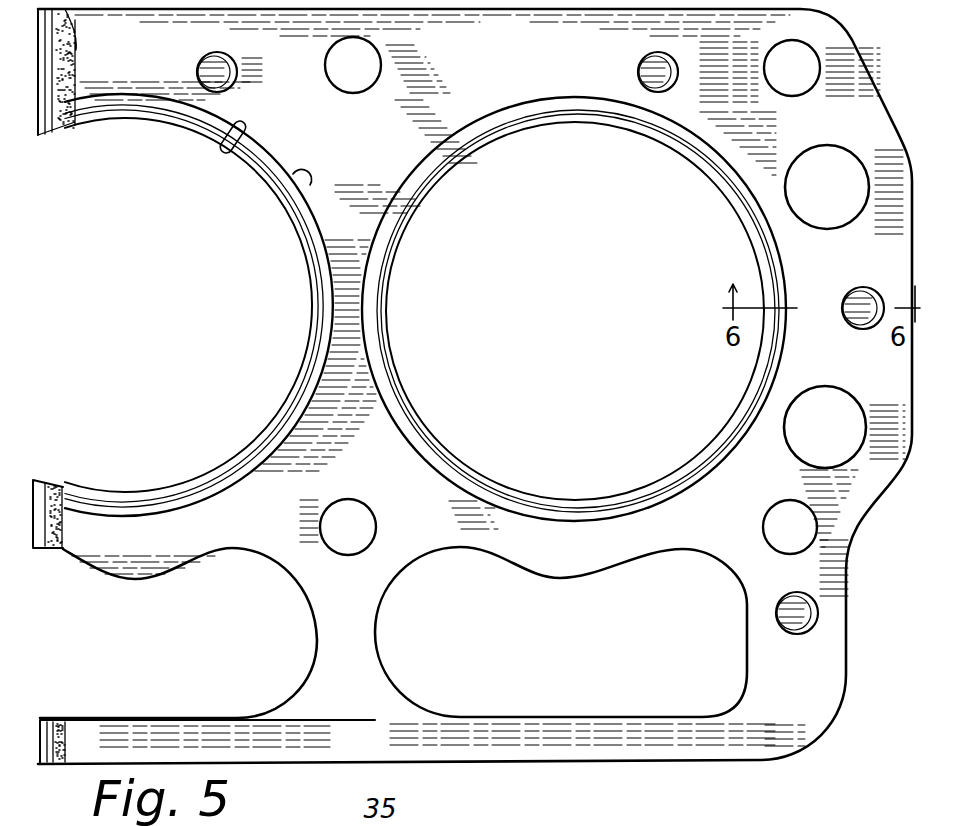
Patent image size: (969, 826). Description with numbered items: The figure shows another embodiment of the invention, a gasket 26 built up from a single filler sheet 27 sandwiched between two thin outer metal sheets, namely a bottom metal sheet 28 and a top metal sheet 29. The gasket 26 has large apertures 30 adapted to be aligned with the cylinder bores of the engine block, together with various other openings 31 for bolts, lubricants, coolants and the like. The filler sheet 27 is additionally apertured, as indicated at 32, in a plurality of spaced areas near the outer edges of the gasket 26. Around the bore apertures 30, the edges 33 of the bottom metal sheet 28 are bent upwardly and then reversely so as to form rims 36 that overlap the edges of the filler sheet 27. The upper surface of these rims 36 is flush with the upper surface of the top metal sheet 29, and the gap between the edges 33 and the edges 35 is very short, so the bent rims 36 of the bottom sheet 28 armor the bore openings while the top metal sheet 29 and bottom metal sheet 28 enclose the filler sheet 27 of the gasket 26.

The gasket 26 is at (567, 762).
The filler sheet 27 is at (66, 78).
The bottom metal sheet 28 is at (40, 483).
The top metal sheet 29 is at (362, 400).
The apertures 30 is at (307, 267).
The openings 31 is at (826, 222).
The apertures in filler sheet 32 is at (851, 324).
The edges of bottom metal sheet 33 is at (303, 187).
The edges 35 is at (236, 140).
The rims 36 is at (56, 136).